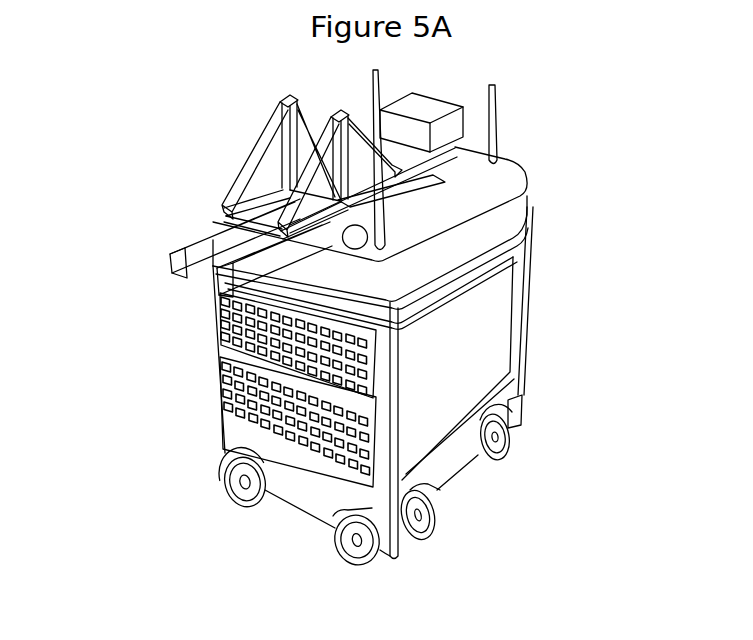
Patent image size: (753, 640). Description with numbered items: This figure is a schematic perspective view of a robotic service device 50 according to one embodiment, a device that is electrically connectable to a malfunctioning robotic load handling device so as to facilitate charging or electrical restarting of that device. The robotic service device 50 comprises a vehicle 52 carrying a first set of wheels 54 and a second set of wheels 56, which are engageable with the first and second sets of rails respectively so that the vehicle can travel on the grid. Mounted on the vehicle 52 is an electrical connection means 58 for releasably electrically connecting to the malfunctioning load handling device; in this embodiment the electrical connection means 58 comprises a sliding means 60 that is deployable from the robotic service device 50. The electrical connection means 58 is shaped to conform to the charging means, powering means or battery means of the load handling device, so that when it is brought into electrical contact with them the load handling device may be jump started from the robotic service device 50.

The robotic service device 50 is at (556, 163).
The vehicle 52 is at (437, 250).
The first set of wheels 54 is at (420, 525).
The second set of wheels 56 is at (242, 488).
The electrical connection means 58 is at (253, 157).
The sliding means 60 is at (178, 244).